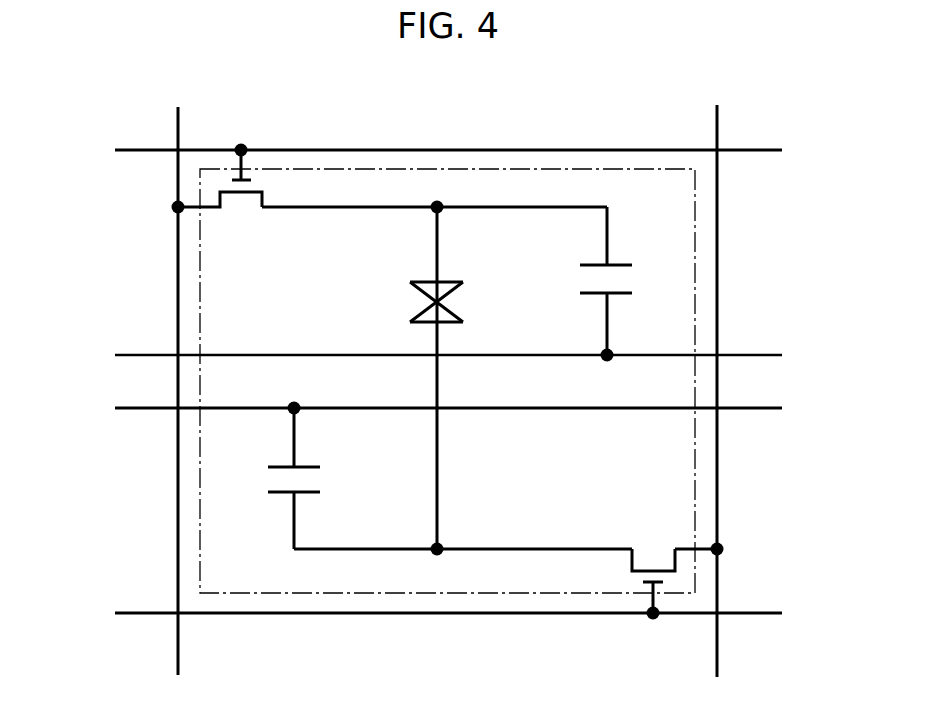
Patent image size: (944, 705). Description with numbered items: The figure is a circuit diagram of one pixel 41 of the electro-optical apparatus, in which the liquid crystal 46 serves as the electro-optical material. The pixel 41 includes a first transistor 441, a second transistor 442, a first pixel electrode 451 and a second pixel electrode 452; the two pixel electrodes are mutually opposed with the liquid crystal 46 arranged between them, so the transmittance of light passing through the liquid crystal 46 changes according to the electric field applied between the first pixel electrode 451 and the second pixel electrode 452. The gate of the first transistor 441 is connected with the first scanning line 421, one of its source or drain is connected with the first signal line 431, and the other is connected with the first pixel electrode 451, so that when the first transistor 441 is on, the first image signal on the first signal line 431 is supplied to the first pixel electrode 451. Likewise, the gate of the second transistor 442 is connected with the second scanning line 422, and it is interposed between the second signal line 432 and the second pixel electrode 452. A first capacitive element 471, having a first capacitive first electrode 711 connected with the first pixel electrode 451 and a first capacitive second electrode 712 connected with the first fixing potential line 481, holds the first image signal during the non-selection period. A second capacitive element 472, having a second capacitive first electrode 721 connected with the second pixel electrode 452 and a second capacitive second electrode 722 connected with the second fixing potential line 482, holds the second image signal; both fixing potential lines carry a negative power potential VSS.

The pixel 41 is at (696, 253).
The first scanning line 421 is at (146, 152).
The second scanning line 422 is at (752, 607).
The first signal line 431 is at (173, 136).
The second signal line 432 is at (720, 630).
The first transistor 441 is at (243, 212).
The second transistor 442 is at (654, 549).
The first pixel electrode 451 is at (411, 281).
The second pixel electrode 452 is at (456, 324).
The liquid crystal 46 is at (432, 298).
The first capacitive element 471 is at (586, 279).
The second capacitive element 472 is at (309, 480).
The first fixing potential line 481 is at (146, 354).
The second fixing potential line 482 is at (752, 410).
The first capacitive first electrode 711 is at (656, 248).
The first capacitive second electrode 712 is at (633, 296).
The second capacitive first electrode 721 is at (270, 494).
The second capacitive second electrode 722 is at (270, 466).